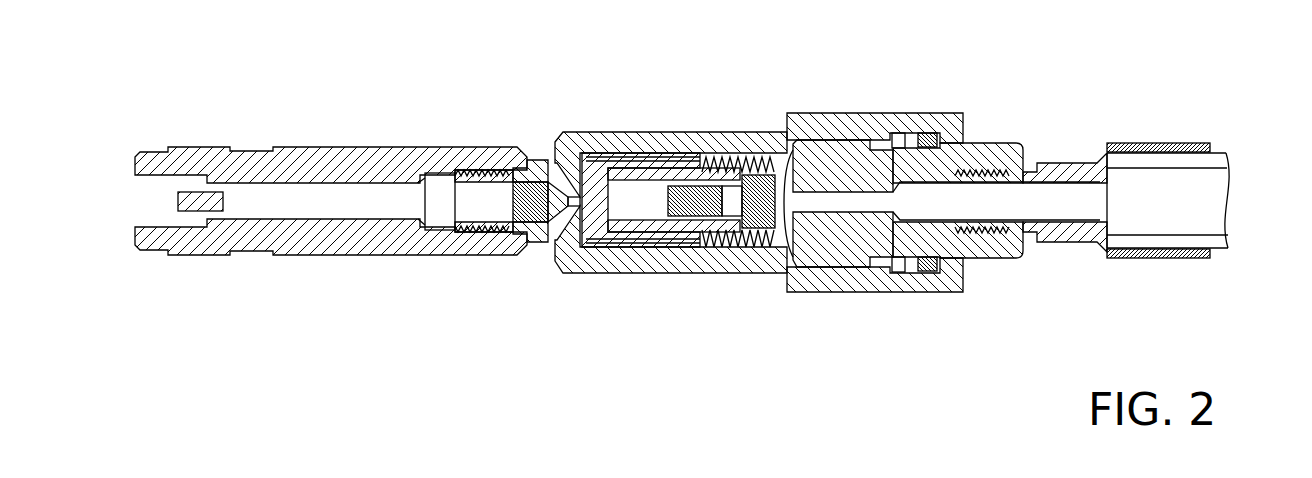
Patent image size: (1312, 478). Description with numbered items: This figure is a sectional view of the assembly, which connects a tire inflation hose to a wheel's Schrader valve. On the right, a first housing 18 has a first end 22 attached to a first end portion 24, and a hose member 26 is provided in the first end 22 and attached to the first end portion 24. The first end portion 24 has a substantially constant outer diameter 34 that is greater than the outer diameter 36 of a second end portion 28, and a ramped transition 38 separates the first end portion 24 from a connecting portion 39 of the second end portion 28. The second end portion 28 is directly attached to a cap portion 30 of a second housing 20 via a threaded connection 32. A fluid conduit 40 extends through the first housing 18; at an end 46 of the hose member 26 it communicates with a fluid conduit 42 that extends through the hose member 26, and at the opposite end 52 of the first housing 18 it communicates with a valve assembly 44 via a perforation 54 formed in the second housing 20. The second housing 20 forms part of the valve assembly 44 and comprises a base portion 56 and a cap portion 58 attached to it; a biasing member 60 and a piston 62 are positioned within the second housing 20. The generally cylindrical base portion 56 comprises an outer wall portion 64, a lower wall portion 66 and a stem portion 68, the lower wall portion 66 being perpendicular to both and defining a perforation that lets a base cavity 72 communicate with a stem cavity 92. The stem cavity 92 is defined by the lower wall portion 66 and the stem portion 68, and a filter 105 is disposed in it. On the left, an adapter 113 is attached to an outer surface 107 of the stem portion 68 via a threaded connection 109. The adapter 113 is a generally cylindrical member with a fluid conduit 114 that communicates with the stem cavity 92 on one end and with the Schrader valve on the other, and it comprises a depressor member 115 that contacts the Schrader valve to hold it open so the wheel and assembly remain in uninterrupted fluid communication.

The first housing 18 is at (1063, 163).
The second housing 20 is at (855, 113).
The first end 22 is at (1217, 143).
The first end portion 24 is at (1170, 143).
The hose member 26 is at (1217, 260).
The second end portion 28 is at (997, 143).
The cap portion 30 is at (980, 143).
The threaded connection 32 is at (990, 240).
The outer diameter 34 is at (1127, 143).
The outer diameter 36 is at (1060, 242).
The ramped transition 38 is at (1100, 245).
The connecting portion 39 is at (1090, 163).
The fluid conduit 40 is at (1040, 163).
The fluid conduit 42 is at (1208, 176).
The valve assembly 44 is at (730, 273).
The end 46 is at (1107, 250).
The opposite end 52 is at (940, 265).
The perforation 54 is at (908, 222).
The base portion 56 is at (578, 143).
The cap portion 58 is at (810, 155).
The biasing member 60 is at (750, 165).
The piston 62 is at (636, 168).
The outer wall portion 64 is at (810, 293).
The lower wall portion 66 is at (556, 236).
The stem portion 68 is at (535, 240).
The base cavity 72 is at (598, 192).
The stem cavity 92 is at (497, 172).
The filter 105 is at (508, 250).
The outer surface 107 is at (533, 160).
The threaded connection 109 is at (463, 150).
The adapter 113 is at (311, 255).
The fluid conduit 114 is at (313, 150).
The depressor member 115 is at (202, 147).